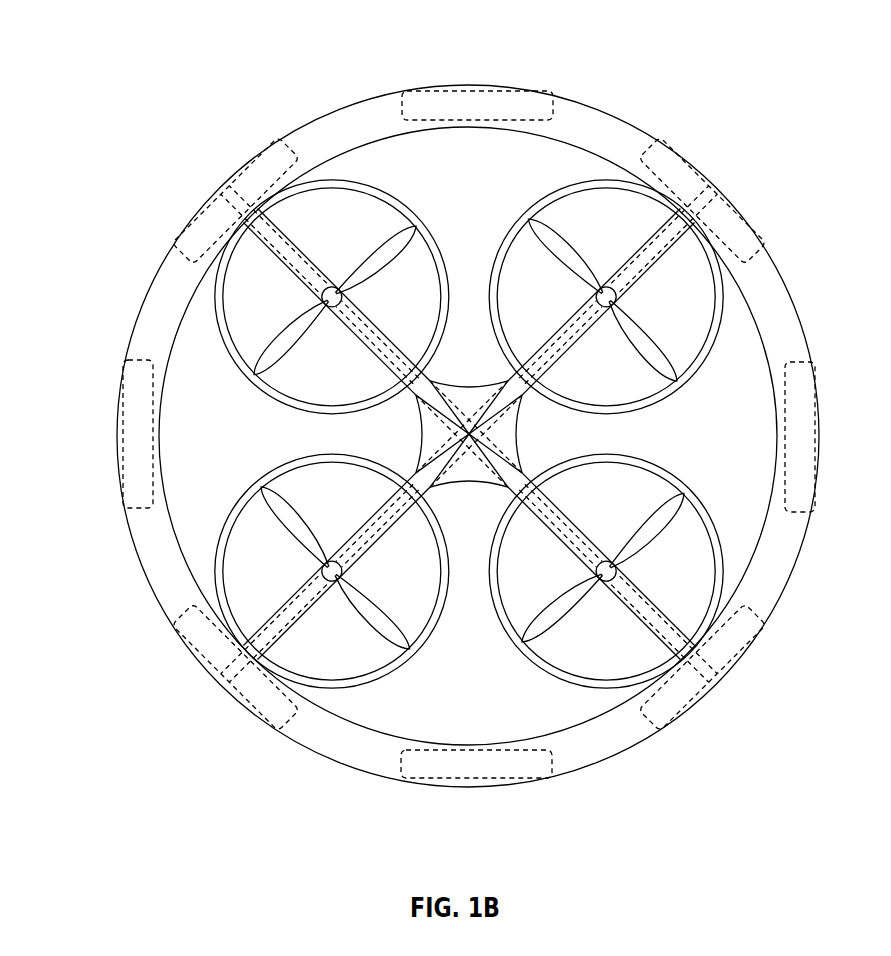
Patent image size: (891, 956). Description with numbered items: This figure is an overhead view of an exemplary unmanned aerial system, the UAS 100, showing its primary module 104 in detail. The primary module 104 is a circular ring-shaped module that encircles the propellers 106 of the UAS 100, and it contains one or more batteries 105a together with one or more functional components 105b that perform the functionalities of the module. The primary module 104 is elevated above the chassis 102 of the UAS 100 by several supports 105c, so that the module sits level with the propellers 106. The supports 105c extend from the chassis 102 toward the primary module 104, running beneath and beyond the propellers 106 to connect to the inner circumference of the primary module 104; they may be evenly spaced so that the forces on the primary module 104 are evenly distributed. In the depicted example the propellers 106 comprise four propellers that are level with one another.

The UAS 100 is at (122, 84).
The chassis 102 is at (462, 473).
The primary module 104 is at (782, 266).
The batteries 105a is at (478, 91).
The functional components 105b is at (213, 207).
The supports 105c is at (308, 278).
The propellers 106 is at (381, 177).